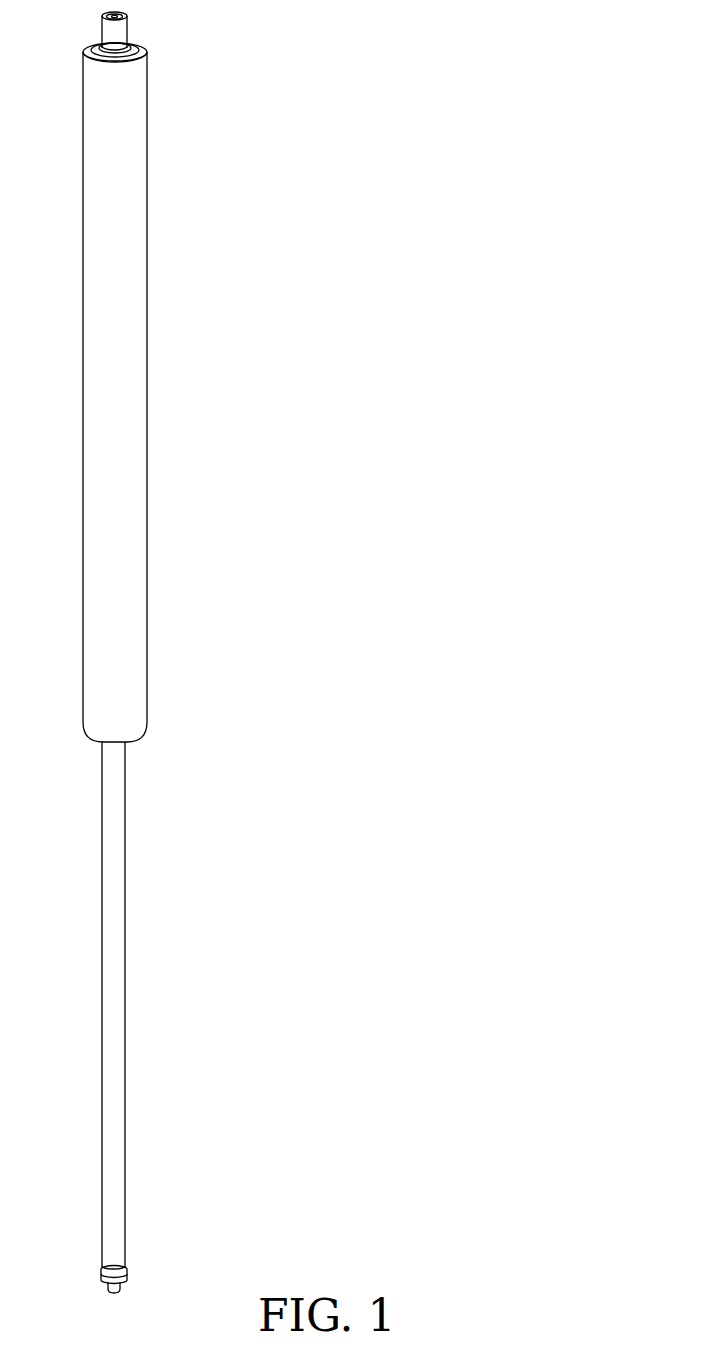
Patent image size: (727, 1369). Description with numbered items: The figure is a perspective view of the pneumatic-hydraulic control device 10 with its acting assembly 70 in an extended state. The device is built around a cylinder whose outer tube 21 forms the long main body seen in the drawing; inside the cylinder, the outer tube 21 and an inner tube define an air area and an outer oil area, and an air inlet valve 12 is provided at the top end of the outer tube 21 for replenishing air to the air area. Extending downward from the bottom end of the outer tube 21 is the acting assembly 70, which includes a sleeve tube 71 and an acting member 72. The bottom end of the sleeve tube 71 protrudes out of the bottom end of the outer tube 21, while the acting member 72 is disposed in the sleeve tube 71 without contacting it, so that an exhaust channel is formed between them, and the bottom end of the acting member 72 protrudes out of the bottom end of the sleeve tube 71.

The pneumatic-hydraulic control device 10 is at (359, 82).
The air inlet valve 12 is at (137, 28).
The outer tube 21 is at (120, 481).
The acting assembly 70 is at (184, 1017).
The sleeve tube 71 is at (112, 1140).
The acting member 72 is at (157, 1266).